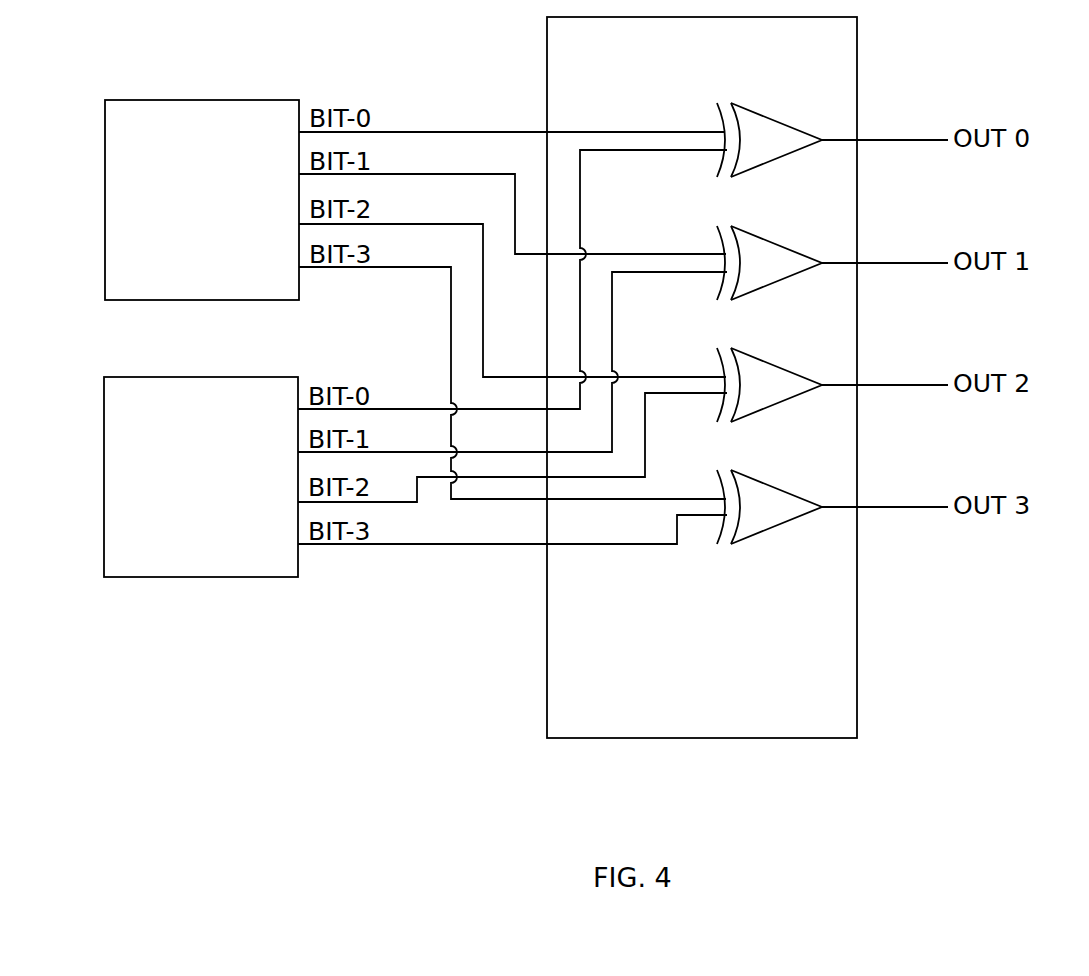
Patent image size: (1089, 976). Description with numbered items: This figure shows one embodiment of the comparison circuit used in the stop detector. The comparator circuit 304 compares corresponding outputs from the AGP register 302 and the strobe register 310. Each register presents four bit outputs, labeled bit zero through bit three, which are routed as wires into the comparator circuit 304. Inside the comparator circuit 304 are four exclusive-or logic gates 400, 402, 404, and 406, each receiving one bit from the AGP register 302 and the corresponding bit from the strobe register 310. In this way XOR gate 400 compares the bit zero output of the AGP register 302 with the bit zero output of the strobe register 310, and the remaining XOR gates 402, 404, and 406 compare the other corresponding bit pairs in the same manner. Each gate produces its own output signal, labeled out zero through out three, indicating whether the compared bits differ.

The AGP register 302 is at (226, 212).
The strobe register 310 is at (225, 490).
The comparator circuit 304 is at (724, 697).
The XOR logic gate 400 is at (790, 152).
The XOR logic gate 402 is at (790, 275).
The XOR logic gate 404 is at (790, 397).
The XOR logic gate 406 is at (790, 519).